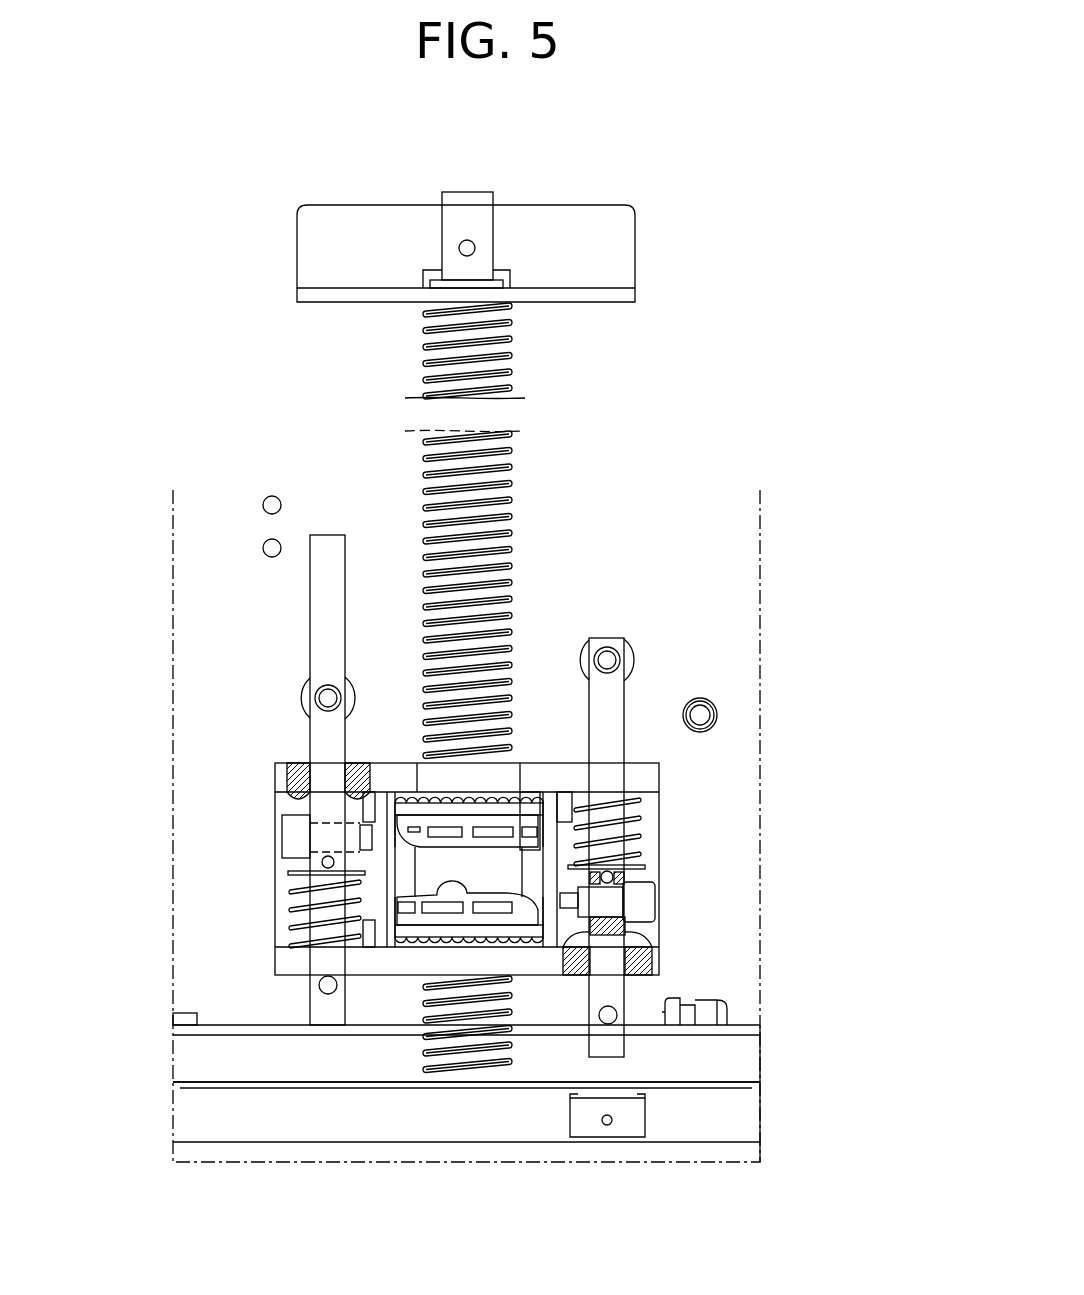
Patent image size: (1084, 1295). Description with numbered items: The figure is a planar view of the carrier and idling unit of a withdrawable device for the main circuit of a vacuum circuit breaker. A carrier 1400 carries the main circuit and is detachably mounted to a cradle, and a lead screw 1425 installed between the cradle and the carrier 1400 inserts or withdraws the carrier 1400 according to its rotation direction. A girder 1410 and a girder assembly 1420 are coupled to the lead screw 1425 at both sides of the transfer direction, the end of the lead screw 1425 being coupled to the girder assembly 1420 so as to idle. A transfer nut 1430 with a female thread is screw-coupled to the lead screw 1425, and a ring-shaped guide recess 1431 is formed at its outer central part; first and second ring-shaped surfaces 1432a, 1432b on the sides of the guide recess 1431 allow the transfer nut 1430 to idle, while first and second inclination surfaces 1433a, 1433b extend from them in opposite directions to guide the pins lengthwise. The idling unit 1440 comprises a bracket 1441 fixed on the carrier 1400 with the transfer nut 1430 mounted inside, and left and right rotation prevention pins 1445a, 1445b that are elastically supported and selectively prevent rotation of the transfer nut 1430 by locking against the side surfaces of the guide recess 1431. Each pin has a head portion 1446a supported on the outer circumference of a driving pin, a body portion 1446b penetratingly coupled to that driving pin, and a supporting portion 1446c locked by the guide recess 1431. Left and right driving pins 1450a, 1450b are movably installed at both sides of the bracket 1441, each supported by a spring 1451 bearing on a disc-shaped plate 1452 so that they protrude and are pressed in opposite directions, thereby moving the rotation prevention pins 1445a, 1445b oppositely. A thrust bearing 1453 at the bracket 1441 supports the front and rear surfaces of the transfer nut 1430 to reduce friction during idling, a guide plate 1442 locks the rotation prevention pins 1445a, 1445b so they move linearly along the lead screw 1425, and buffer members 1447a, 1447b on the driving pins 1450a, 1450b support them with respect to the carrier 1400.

The carrier 1400 is at (723, 583).
The girder 1410 is at (307, 295).
The girder assembly 1420 is at (421, 1097).
The lead screw 1425 is at (423, 470).
The transfer nut 1430 is at (398, 892).
The guide recess 1431 is at (400, 886).
The first ring-shaped surface 1432a is at (413, 863).
The second ring-shaped surface 1432b is at (428, 884).
The first inclination surface 1433a is at (497, 848).
The second inclination surface 1433b is at (557, 905).
The idling unit 1440 is at (668, 848).
The bracket 1441 is at (290, 760).
The guide plate 1442 is at (387, 803).
The left rotation prevention pin 1445a is at (293, 838).
The right rotation prevention pin 1445b is at (751, 931).
The head portion 1446a is at (645, 895).
The body portion 1446b is at (640, 933).
The supporting portion 1446c is at (607, 925).
The buffer member 1447a is at (300, 700).
The buffer member 1447b is at (633, 658).
The left driving pin 1450a is at (325, 628).
The right driving pin 1450b is at (615, 693).
The spring 1451 is at (360, 903).
The disc-shaped plate 1452 is at (293, 873).
The thrust bearing 1453 is at (520, 793).